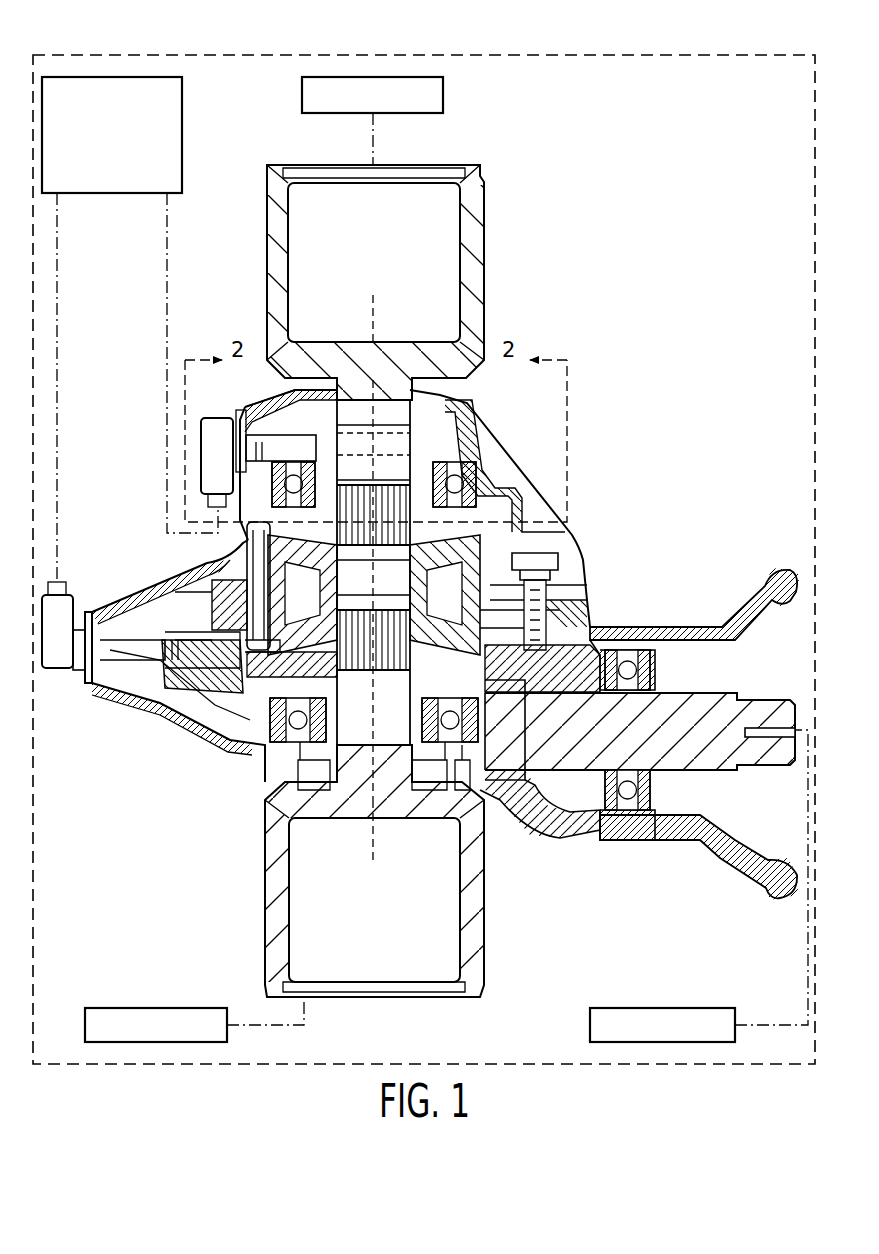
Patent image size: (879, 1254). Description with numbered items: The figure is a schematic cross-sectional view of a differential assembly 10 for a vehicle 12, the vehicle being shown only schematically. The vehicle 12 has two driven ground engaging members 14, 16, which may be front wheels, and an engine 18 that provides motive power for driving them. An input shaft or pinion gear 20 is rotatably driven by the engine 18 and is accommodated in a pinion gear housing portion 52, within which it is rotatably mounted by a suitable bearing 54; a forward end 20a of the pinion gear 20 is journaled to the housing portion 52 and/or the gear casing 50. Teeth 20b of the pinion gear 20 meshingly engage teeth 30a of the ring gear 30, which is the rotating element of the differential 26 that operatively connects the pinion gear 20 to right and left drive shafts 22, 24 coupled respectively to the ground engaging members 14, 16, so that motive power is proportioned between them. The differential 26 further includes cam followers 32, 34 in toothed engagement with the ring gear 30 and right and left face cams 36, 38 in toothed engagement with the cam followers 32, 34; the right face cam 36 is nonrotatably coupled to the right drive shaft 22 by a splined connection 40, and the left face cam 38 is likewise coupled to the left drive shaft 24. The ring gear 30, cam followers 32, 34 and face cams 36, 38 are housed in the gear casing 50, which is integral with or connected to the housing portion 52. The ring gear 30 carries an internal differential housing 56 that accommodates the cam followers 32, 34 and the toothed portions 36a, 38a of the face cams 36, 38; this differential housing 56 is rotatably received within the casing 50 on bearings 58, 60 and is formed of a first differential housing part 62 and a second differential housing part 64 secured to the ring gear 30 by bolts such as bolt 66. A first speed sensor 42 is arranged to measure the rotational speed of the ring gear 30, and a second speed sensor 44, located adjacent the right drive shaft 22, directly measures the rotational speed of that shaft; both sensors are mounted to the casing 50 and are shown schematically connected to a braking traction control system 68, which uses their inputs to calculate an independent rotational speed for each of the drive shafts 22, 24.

The differential assembly 10 is at (590, 547).
The vehicle 12 is at (429, 55).
The driven ground engaging member 14 is at (443, 95).
The driven ground engaging member 16 is at (155, 1008).
The engine 18 is at (662, 1008).
The pinion gear 20 is at (707, 765).
The forward end 20a is at (514, 742).
The teeth 20b is at (555, 794).
The right drive shaft 22 is at (405, 468).
The left drive shaft 24 is at (300, 812).
The differential 26 is at (258, 684).
The ring gear 30 is at (152, 700).
The teeth 30a is at (118, 686).
The cam follower 32 is at (282, 546).
The cam follower 34 is at (516, 560).
The right face cam 36 is at (265, 518).
The toothed portion 36a is at (522, 527).
The left face cam 38 is at (189, 700).
The toothed portion 38a is at (500, 618).
The splined connection 40 is at (352, 556).
The first speed sensor 42 is at (60, 662).
The second speed sensor 44 is at (213, 422).
The gear casing 50 is at (182, 714).
The pinion gear housing portion 52 is at (645, 826).
The bearing 54 is at (652, 686).
The internal differential housing 56 is at (286, 684).
The bearing 58 is at (412, 470).
The bearing 60 is at (462, 766).
The first differential housing part 62 is at (212, 613).
The second differential housing part 64 is at (196, 570).
The bolt 66 is at (570, 590).
The braking traction control system 68 is at (182, 135).